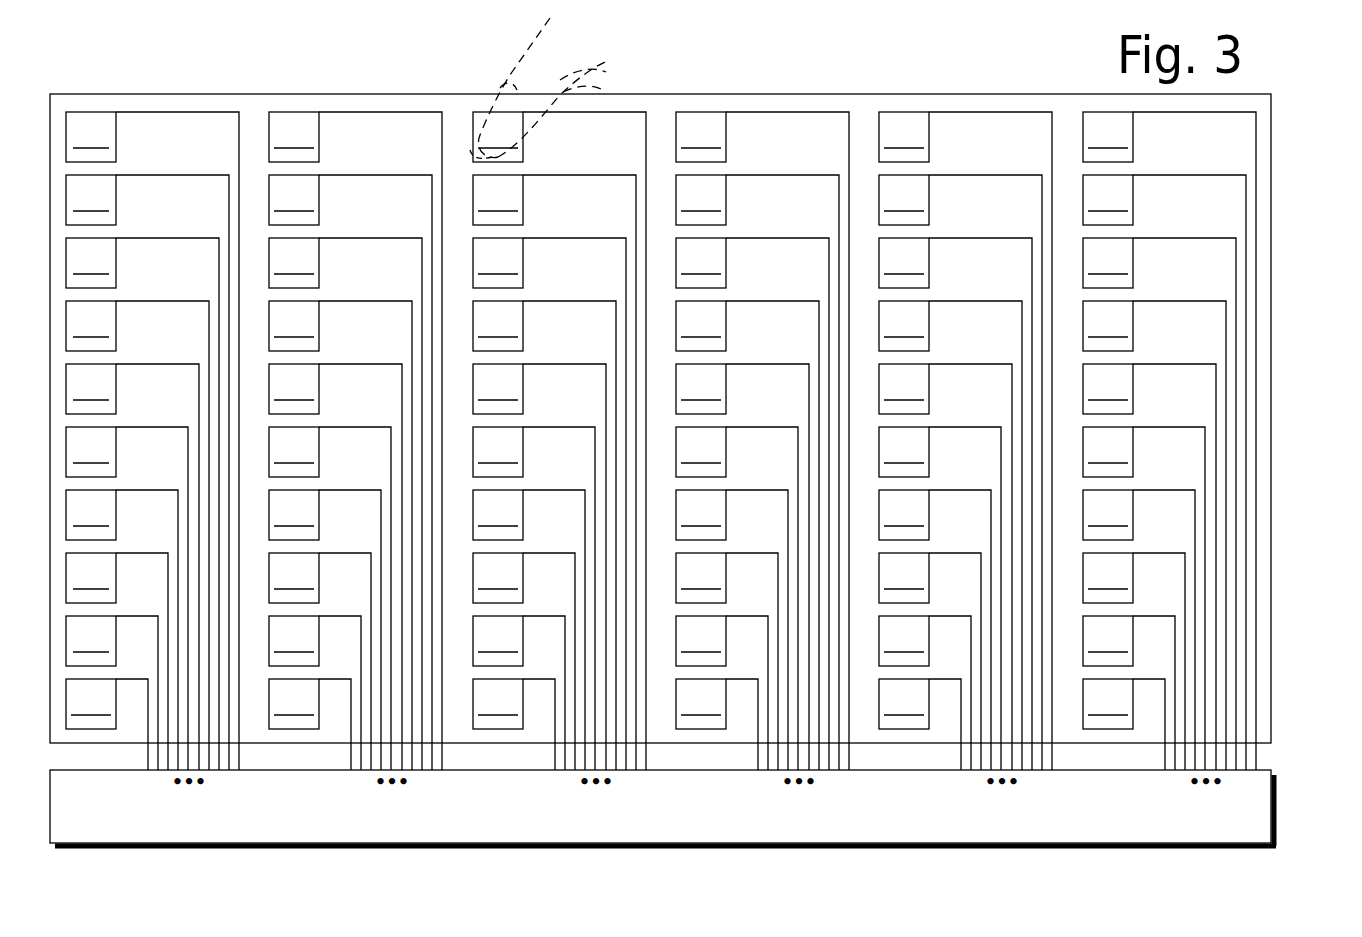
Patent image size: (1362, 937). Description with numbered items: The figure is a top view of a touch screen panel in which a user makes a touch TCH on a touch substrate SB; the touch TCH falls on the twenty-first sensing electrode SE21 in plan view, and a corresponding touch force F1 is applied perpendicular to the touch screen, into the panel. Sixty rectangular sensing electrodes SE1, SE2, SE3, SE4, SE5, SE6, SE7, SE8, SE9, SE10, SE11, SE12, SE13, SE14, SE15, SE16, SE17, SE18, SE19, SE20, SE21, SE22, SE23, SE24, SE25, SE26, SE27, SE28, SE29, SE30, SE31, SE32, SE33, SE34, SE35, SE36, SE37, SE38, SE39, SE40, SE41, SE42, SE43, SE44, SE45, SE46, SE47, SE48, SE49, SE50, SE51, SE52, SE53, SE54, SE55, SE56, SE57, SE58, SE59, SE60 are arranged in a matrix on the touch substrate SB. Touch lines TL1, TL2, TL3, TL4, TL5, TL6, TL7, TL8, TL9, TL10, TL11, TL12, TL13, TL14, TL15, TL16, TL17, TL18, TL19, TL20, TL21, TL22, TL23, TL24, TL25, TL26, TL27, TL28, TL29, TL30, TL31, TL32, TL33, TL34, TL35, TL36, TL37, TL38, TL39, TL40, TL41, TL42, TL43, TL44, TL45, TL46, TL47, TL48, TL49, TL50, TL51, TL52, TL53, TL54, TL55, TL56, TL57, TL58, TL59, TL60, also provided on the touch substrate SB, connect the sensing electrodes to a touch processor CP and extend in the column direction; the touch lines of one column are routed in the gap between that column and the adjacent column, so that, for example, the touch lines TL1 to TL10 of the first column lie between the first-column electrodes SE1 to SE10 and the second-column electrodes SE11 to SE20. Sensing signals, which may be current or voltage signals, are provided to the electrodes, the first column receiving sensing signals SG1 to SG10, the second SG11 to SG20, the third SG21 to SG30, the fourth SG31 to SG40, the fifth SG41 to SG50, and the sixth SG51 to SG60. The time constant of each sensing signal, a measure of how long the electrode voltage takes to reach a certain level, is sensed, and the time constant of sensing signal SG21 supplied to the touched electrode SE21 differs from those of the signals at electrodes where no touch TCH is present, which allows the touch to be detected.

The touch substrate SB is at (660, 395).
The touch processor CP is at (1277, 812).
The touch force F1 is at (483, 108).
The touch TCH is at (497, 153).
The sensing electrode SE1 is at (91, 137).
The sensing electrode SE2 is at (91, 200).
The sensing electrode SE3 is at (91, 263).
The sensing electrode SE4 is at (91, 326).
The sensing electrode SE5 is at (91, 389).
The sensing electrode SE6 is at (91, 452).
The sensing electrode SE7 is at (91, 515).
The sensing electrode SE8 is at (91, 578).
The sensing electrode SE9 is at (91, 641).
The sensing electrode SE10 is at (91, 704).
The sensing electrode SE11 is at (294, 137).
The sensing electrode SE12 is at (294, 200).
The sensing electrode SE13 is at (294, 263).
The sensing electrode SE14 is at (294, 326).
The sensing electrode SE15 is at (294, 389).
The sensing electrode SE16 is at (294, 452).
The sensing electrode SE17 is at (294, 515).
The sensing electrode SE18 is at (294, 578).
The sensing electrode SE19 is at (294, 641).
The sensing electrode SE20 is at (294, 704).
The sensing electrode SE21 is at (498, 137).
The sensing electrode SE22 is at (498, 200).
The sensing electrode SE23 is at (498, 263).
The sensing electrode SE24 is at (498, 326).
The sensing electrode SE25 is at (498, 389).
The sensing electrode SE26 is at (498, 452).
The sensing electrode SE27 is at (498, 515).
The sensing electrode SE28 is at (498, 578).
The sensing electrode SE29 is at (498, 641).
The sensing electrode SE30 is at (498, 704).
The sensing electrode SE31 is at (701, 137).
The sensing electrode SE32 is at (701, 200).
The sensing electrode SE33 is at (701, 263).
The sensing electrode SE34 is at (701, 326).
The sensing electrode SE35 is at (701, 389).
The sensing electrode SE36 is at (701, 452).
The sensing electrode SE37 is at (701, 515).
The sensing electrode SE38 is at (701, 578).
The sensing electrode SE39 is at (701, 641).
The sensing electrode SE40 is at (701, 704).
The sensing electrode SE41 is at (904, 137).
The sensing electrode SE42 is at (904, 200).
The sensing electrode SE43 is at (904, 263).
The sensing electrode SE44 is at (904, 326).
The sensing electrode SE45 is at (904, 389).
The sensing electrode SE46 is at (904, 452).
The sensing electrode SE47 is at (904, 515).
The sensing electrode SE48 is at (904, 578).
The sensing electrode SE49 is at (904, 641).
The sensing electrode SE50 is at (904, 704).
The sensing electrode SE51 is at (1108, 137).
The sensing electrode SE52 is at (1108, 200).
The sensing electrode SE53 is at (1108, 263).
The sensing electrode SE54 is at (1108, 326).
The sensing electrode SE55 is at (1108, 389).
The sensing electrode SE56 is at (1108, 452).
The sensing electrode SE57 is at (1108, 515).
The sensing electrode SE58 is at (1108, 578).
The sensing electrode SE59 is at (1108, 641).
The sensing electrode SE60 is at (1108, 704).
The touch line TL1 is at (177, 441).
The touch line TL2 is at (172, 472).
The touch line TL3 is at (167, 504).
The touch line TL4 is at (162, 535).
The touch line TL5 is at (157, 567).
The touch line TL6 is at (152, 598).
The touch line TL7 is at (147, 630).
The touch line TL8 is at (142, 661).
The touch line TL9 is at (137, 693).
The touch line TL10 is at (132, 724).
The touch line TL11 is at (380, 441).
The touch line TL12 is at (375, 472).
The touch line TL13 is at (370, 504).
The touch line TL14 is at (365, 535).
The touch line TL15 is at (360, 567).
The touch line TL16 is at (355, 598).
The touch line TL17 is at (350, 630).
The touch line TL18 is at (345, 661).
The touch line TL19 is at (340, 693).
The touch line TL20 is at (335, 724).
The touch line TL21 is at (584, 441).
The touch line TL22 is at (579, 472).
The touch line TL23 is at (574, 504).
The touch line TL24 is at (569, 535).
The touch line TL25 is at (564, 567).
The touch line TL26 is at (559, 598).
The touch line TL27 is at (554, 630).
The touch line TL28 is at (549, 661).
The touch line TL29 is at (544, 693).
The touch line TL30 is at (539, 724).
The touch line TL31 is at (787, 441).
The touch line TL32 is at (782, 472).
The touch line TL33 is at (777, 504).
The touch line TL34 is at (772, 535).
The touch line TL35 is at (767, 567).
The touch line TL36 is at (762, 598).
The touch line TL37 is at (757, 630).
The touch line TL38 is at (752, 661).
The touch line TL39 is at (747, 693).
The touch line TL40 is at (742, 724).
The touch line TL41 is at (990, 441).
The touch line TL42 is at (985, 472).
The touch line TL43 is at (980, 504).
The touch line TL44 is at (975, 535).
The touch line TL45 is at (970, 567).
The touch line TL46 is at (965, 598).
The touch line TL47 is at (960, 630).
The touch line TL48 is at (955, 661).
The touch line TL49 is at (950, 693).
The touch line TL50 is at (945, 724).
The touch line TL51 is at (1194, 441).
The touch line TL52 is at (1189, 472).
The touch line TL53 is at (1184, 504).
The touch line TL54 is at (1179, 535).
The touch line TL55 is at (1174, 567).
The touch line TL56 is at (1169, 598).
The touch line TL57 is at (1164, 630).
The touch line TL58 is at (1159, 661).
The touch line TL59 is at (1154, 693).
The touch line TL60 is at (1149, 724).
The sensing signal SG1 is at (146, 783).
The sensing signal SG10 is at (238, 783).
The sensing signal SG11 is at (349, 783).
The sensing signal SG20 is at (441, 783).
The sensing signal SG21 is at (553, 783).
The sensing signal SG30 is at (645, 783).
The sensing signal SG31 is at (756, 783).
The sensing signal SG40 is at (848, 783).
The sensing signal SG41 is at (959, 783).
The sensing signal SG50 is at (1051, 783).
The sensing signal SG51 is at (1163, 783).
The sensing signal SG60 is at (1255, 783).